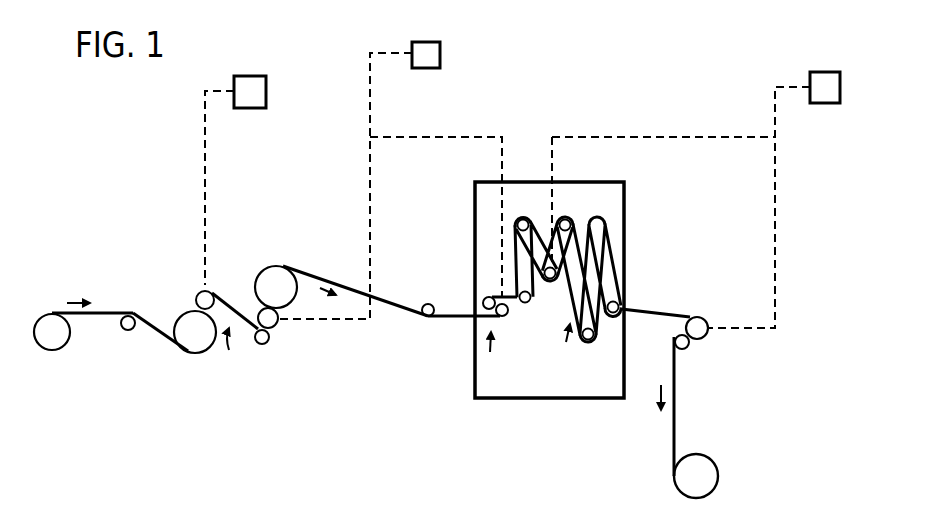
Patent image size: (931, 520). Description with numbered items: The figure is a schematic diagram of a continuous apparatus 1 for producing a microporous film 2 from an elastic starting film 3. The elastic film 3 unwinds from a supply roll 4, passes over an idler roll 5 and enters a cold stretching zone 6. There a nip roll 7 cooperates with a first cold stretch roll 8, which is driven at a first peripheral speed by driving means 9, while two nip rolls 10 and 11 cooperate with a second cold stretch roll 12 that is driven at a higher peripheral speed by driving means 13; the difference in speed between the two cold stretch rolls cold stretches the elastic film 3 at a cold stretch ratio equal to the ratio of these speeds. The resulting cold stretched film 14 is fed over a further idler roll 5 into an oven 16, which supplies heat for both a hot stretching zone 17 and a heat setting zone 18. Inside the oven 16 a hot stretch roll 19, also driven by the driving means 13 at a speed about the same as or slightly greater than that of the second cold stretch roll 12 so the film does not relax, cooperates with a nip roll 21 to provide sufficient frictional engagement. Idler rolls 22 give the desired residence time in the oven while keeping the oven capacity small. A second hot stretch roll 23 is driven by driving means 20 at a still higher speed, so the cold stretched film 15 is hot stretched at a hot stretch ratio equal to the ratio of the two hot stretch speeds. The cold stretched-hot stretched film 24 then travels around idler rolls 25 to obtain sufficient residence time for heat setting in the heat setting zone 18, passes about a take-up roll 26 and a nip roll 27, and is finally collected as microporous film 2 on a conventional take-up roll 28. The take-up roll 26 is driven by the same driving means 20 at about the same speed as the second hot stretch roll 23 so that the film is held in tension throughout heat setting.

The continuous apparatus 1 is at (141, 226).
The microporous film 2 is at (675, 430).
The elastic starting film 3 is at (101, 326).
The supply roll 4 is at (52, 342).
The idler roll 5 is at (133, 332).
The cold stretching zone 6 is at (228, 354).
The nip roll 7 is at (190, 341).
The first cold stretch roll 8 is at (200, 293).
The driving means 9 is at (250, 88).
The nip roll 10 is at (262, 346).
The nip roll 11 is at (270, 276).
The second cold stretch roll 12 is at (271, 330).
The driving means 13 is at (435, 58).
The cold stretched film 14 is at (385, 296).
The cold stretched film 15 is at (426, 303).
The oven 16 is at (475, 368).
The hot stretching zone 17 is at (499, 354).
The heat setting zone 18 is at (556, 350).
The hot stretch roll 19 is at (506, 318).
The driving means 20 is at (821, 80).
The nip roll 21 is at (483, 302).
The idler rolls 22 is at (524, 218).
The second hot stretch roll 23 is at (553, 280).
The cold stretched-hot stretched film 24 is at (578, 250).
The idler rolls 25 is at (566, 218).
The take-up roll 26 is at (697, 317).
The nip roll 27 is at (686, 350).
The take-up roll 28 is at (710, 468).